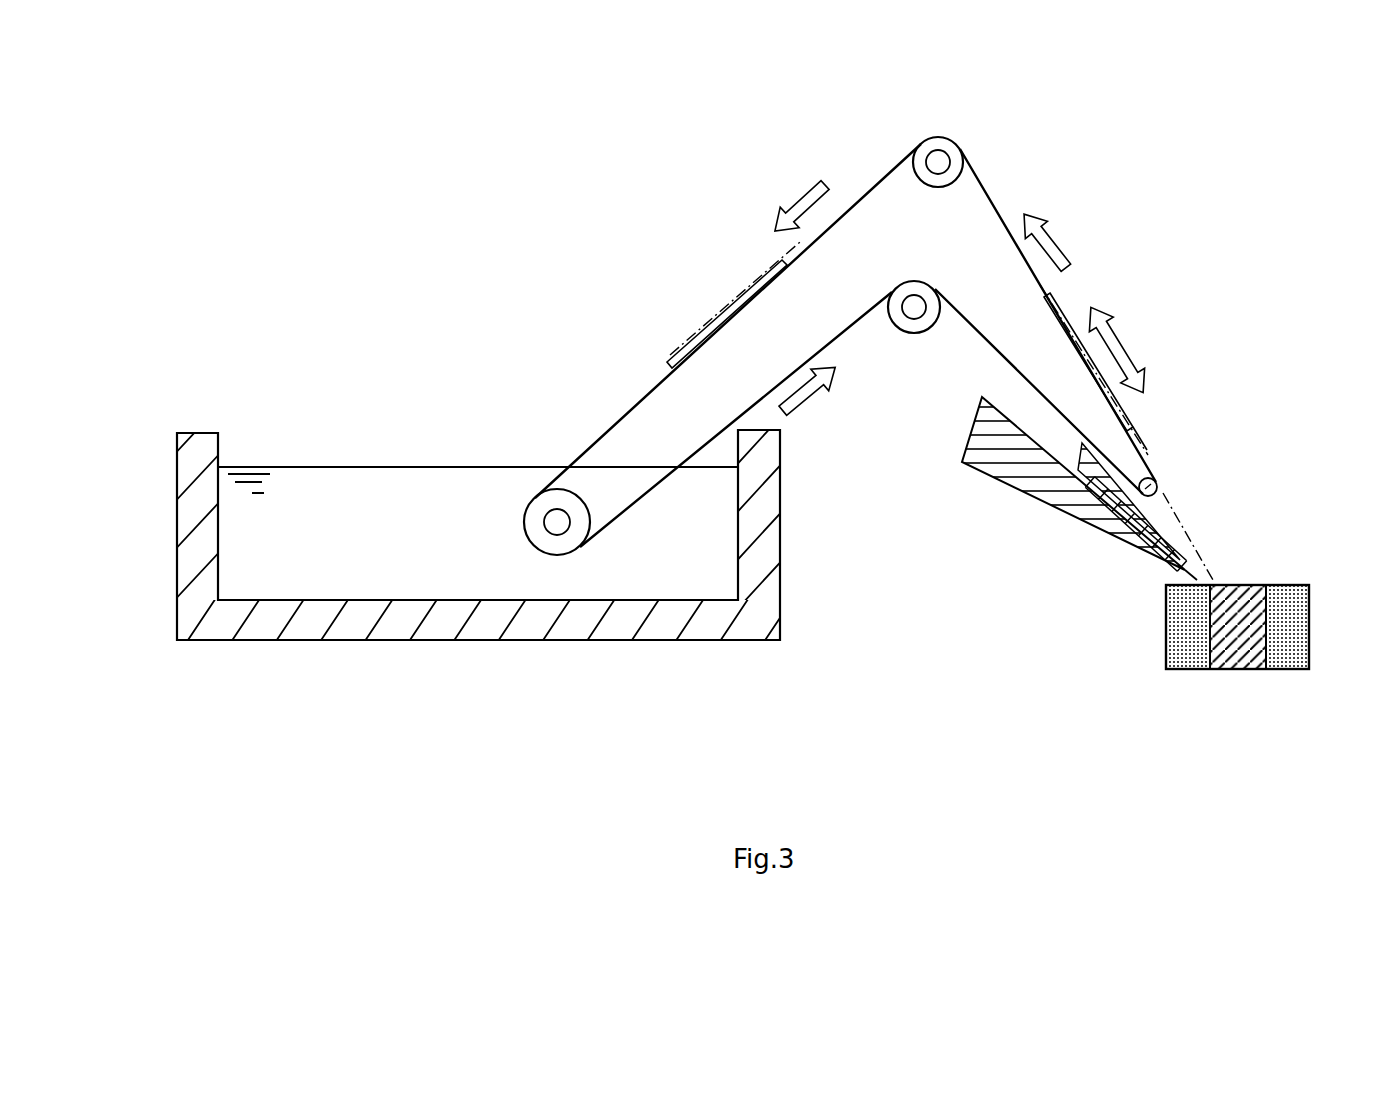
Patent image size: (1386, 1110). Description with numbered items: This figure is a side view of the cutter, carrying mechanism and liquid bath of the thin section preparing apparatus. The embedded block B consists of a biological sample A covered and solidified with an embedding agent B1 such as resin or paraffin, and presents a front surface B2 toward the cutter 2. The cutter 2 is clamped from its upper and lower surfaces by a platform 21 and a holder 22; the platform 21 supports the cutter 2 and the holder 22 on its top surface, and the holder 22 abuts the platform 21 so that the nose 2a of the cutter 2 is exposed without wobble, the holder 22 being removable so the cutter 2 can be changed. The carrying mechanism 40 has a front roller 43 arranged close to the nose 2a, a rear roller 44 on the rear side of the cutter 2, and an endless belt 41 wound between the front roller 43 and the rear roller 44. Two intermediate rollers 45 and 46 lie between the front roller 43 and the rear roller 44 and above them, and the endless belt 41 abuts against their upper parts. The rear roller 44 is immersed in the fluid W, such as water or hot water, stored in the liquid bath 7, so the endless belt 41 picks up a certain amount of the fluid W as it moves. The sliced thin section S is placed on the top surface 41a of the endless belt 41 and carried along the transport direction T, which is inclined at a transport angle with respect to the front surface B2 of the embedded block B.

The liquid bath 7 is at (205, 450).
The fluid W is at (416, 482).
The carrying mechanism 40 is at (1043, 158).
The endless belt 41 is at (886, 162).
The top surface 41a is at (1147, 428).
The front roller 43 is at (1158, 483).
The rear roller 44 is at (556, 520).
The intermediate roller 45 is at (940, 160).
The intermediate roller 46 is at (914, 308).
The thin section S is at (702, 328).
The transport direction T is at (1117, 350).
The platform 21 is at (968, 445).
The holder 22 is at (1087, 477).
The cutter 2 is at (1160, 548).
The nose 2a is at (1197, 578).
The biological sample A is at (1243, 660).
The embedded block B is at (1187, 675).
The embedding agent B1 is at (1293, 672).
The front surface B2 is at (1285, 585).